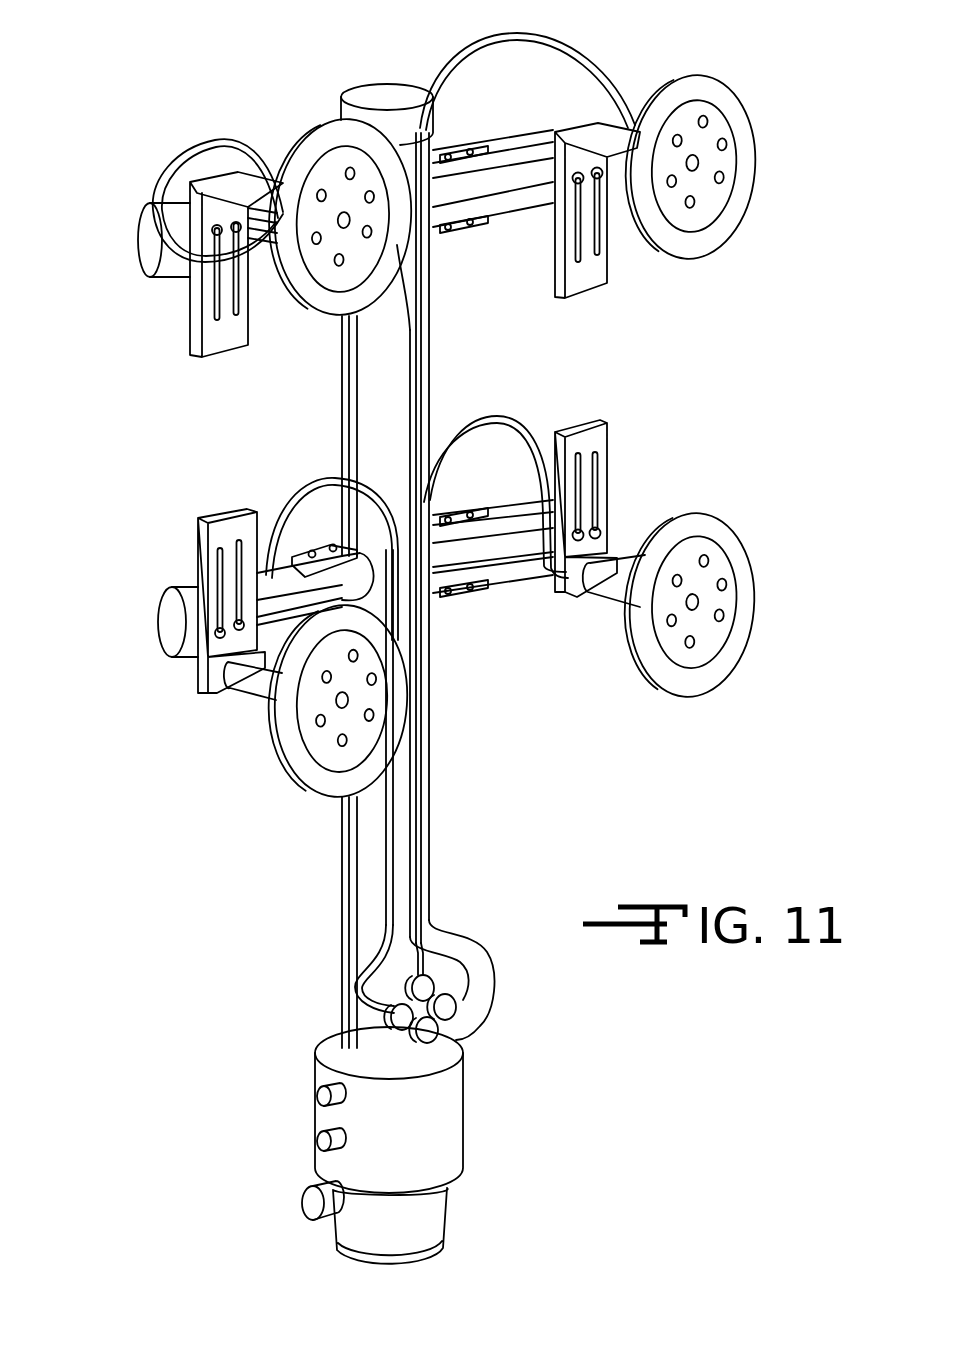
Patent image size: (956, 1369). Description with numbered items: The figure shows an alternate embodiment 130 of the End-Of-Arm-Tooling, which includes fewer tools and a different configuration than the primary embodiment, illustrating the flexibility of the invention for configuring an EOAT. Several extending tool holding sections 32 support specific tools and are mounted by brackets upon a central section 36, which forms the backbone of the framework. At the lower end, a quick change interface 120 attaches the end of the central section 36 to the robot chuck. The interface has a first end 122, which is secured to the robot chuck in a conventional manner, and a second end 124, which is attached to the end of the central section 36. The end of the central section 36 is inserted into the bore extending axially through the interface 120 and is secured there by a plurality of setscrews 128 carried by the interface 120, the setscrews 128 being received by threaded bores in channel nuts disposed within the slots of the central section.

The alternate embodiment of the EOAT 130 is at (203, 443).
The tool holding section 32 is at (527, 210).
The central section 36 is at (430, 782).
The quick change interface 120 is at (440, 1110).
The first end 122 is at (440, 1200).
The second end 124 is at (320, 1075).
The setscrews 128 is at (317, 1095).